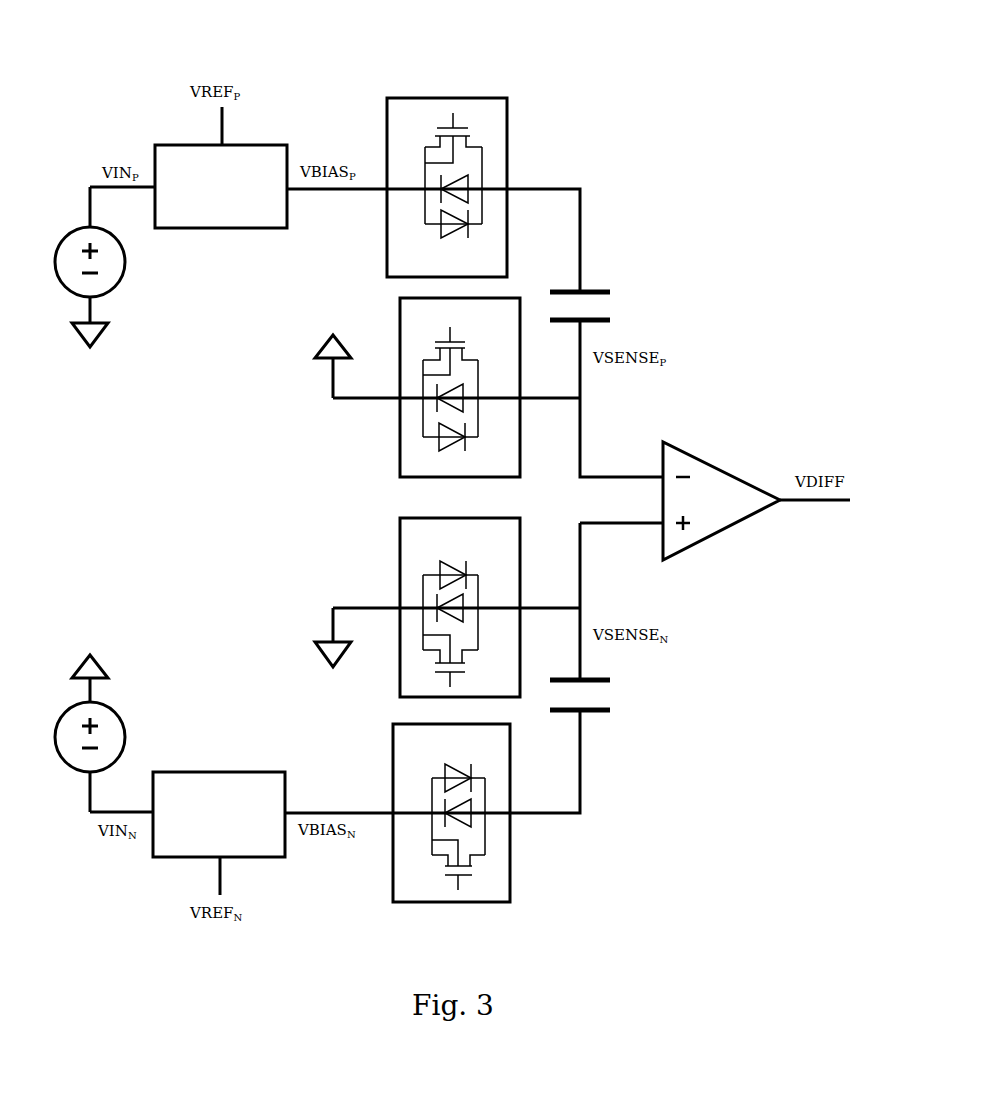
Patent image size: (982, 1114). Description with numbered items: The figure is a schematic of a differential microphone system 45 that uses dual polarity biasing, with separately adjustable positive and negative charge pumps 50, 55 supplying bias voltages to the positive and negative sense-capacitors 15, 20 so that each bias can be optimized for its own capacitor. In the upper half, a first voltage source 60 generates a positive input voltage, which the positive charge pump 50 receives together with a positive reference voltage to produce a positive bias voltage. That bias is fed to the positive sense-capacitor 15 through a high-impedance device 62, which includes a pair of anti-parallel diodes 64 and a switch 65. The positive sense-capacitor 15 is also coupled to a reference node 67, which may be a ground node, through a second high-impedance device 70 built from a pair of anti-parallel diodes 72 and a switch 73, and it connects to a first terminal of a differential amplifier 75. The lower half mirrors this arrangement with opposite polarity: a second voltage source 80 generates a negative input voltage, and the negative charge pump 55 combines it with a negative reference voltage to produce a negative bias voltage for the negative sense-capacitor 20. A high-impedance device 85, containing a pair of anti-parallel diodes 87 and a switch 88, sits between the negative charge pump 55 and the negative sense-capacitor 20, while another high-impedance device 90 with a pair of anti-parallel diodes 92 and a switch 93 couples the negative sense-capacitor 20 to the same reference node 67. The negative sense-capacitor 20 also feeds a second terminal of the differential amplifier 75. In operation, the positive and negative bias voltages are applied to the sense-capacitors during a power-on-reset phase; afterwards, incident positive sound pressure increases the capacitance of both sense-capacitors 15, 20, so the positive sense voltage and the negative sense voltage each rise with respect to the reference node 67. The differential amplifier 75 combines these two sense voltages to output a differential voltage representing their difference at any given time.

The differential microphone system 45 is at (323, 62).
The positive charge pump 50 is at (222, 228).
The negative charge pump 55 is at (220, 772).
The first voltage source 60 is at (126, 265).
The second voltage source 80 is at (126, 737).
The reference node 67 is at (103, 333).
The high-impedance device 62 is at (447, 161).
The switch 65 is at (423, 141).
The pair of anti-parallel diodes 64 is at (420, 214).
The high-impedance device 70 is at (435, 382).
The switch 73 is at (485, 355).
The pair of anti-parallel diodes 72 is at (485, 424).
The high-impedance device 90 is at (422, 600).
The pair of anti-parallel diodes 92 is at (485, 574).
The switch 93 is at (485, 645).
The high-impedance device 85 is at (451, 848).
The pair of anti-parallel diodes 87 is at (424, 778).
The switch 88 is at (424, 858).
The positive sense-capacitor 15 is at (610, 292).
The negative sense-capacitor 20 is at (610, 710).
The differential amplifier 75 is at (723, 467).